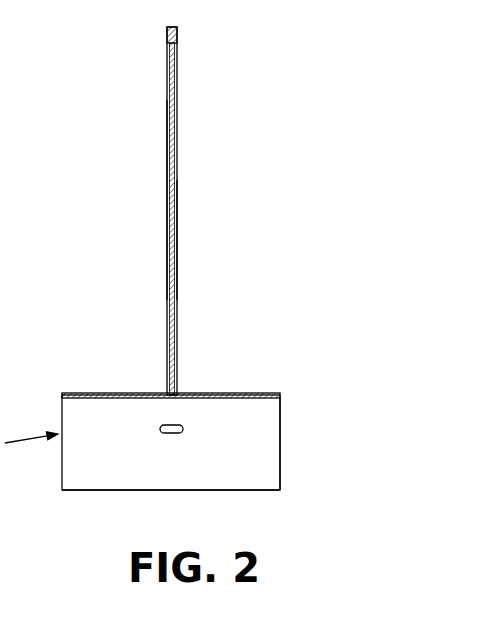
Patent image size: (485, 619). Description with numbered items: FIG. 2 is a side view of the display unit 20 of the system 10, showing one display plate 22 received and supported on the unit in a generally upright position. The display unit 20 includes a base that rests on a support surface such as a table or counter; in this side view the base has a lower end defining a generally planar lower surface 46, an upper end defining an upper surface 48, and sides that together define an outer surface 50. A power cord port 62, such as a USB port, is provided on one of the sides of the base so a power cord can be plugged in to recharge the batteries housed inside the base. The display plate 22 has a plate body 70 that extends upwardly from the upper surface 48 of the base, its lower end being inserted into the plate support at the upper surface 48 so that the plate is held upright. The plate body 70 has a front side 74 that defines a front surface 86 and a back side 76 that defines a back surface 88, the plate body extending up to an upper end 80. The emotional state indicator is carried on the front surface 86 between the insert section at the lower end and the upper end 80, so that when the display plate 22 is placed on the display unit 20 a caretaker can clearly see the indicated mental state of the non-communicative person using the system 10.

The system 10 is at (276, 109).
The display unit 20 is at (293, 387).
The display plate 22 is at (156, 240).
The lower surface 46 is at (108, 497).
The upper surface 48 is at (102, 385).
The outer surface 50 is at (247, 457).
The power cord port 62 is at (189, 420).
The plate body 70 is at (172, 74).
The front side 74 is at (126, 203).
The back side 76 is at (199, 212).
The upper end 80 is at (152, 27).
The front surface 86 is at (152, 135).
The back surface 88 is at (189, 258).